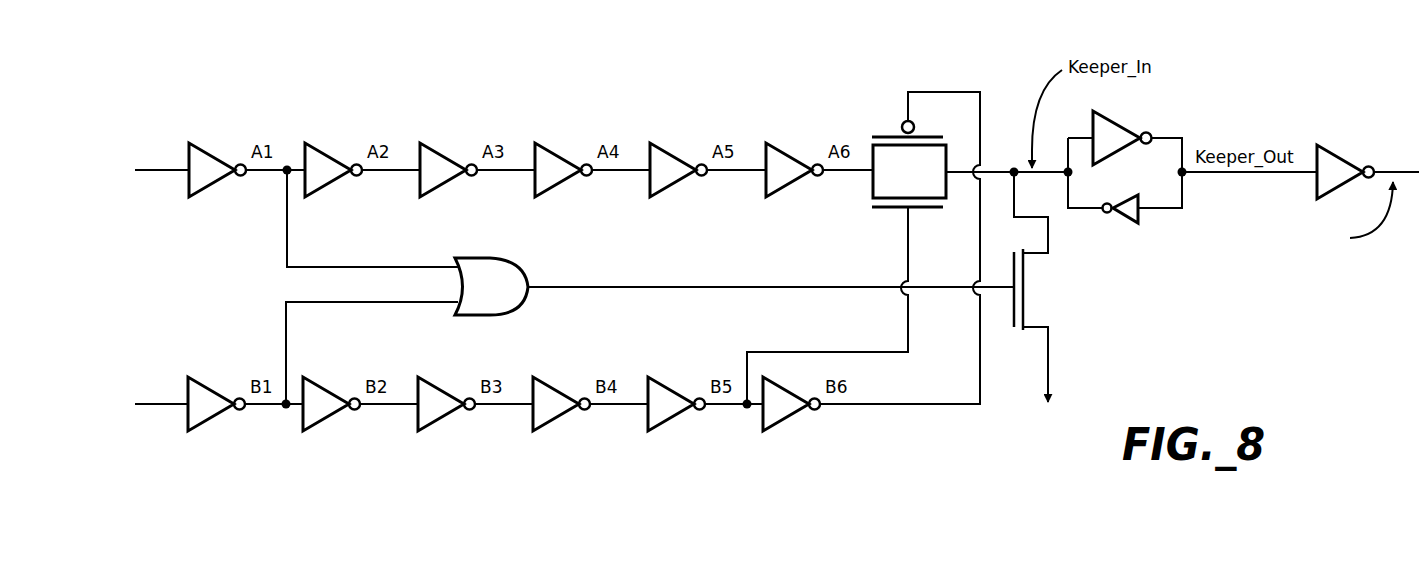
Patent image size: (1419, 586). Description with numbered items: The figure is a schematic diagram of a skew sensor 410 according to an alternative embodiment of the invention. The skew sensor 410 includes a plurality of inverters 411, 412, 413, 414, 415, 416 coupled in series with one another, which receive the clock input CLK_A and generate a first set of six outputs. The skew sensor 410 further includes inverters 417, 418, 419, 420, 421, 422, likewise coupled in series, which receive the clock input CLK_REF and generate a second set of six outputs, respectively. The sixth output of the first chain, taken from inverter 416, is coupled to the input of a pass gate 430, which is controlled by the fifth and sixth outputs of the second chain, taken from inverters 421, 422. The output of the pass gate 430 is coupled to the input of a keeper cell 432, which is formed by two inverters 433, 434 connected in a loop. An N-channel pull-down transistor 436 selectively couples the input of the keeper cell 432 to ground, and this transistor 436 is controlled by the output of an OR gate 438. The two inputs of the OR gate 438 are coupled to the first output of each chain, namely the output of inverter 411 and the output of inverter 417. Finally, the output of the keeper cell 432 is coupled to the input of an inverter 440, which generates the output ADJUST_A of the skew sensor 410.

The skew sensor 410 is at (198, 78).
The inverter 411 is at (202, 150).
The inverter 412 is at (318, 150).
The inverter 413 is at (433, 150).
The inverter 414 is at (548, 150).
The inverter 415 is at (663, 150).
The inverter 416 is at (779, 150).
The inverter 417 is at (204, 428).
The inverter 418 is at (319, 428).
The inverter 419 is at (434, 428).
The inverter 420 is at (549, 428).
The inverter 421 is at (664, 428).
The inverter 422 is at (779, 428).
The pass gate 430 is at (872, 180).
The keeper cell 432 is at (1175, 168).
The inverter 433 is at (1108, 118).
The inverter 434 is at (1128, 222).
The N-channel pull-down transistor 436 is at (1025, 278).
The OR gate 438 is at (472, 258).
The inverter 440 is at (1330, 152).